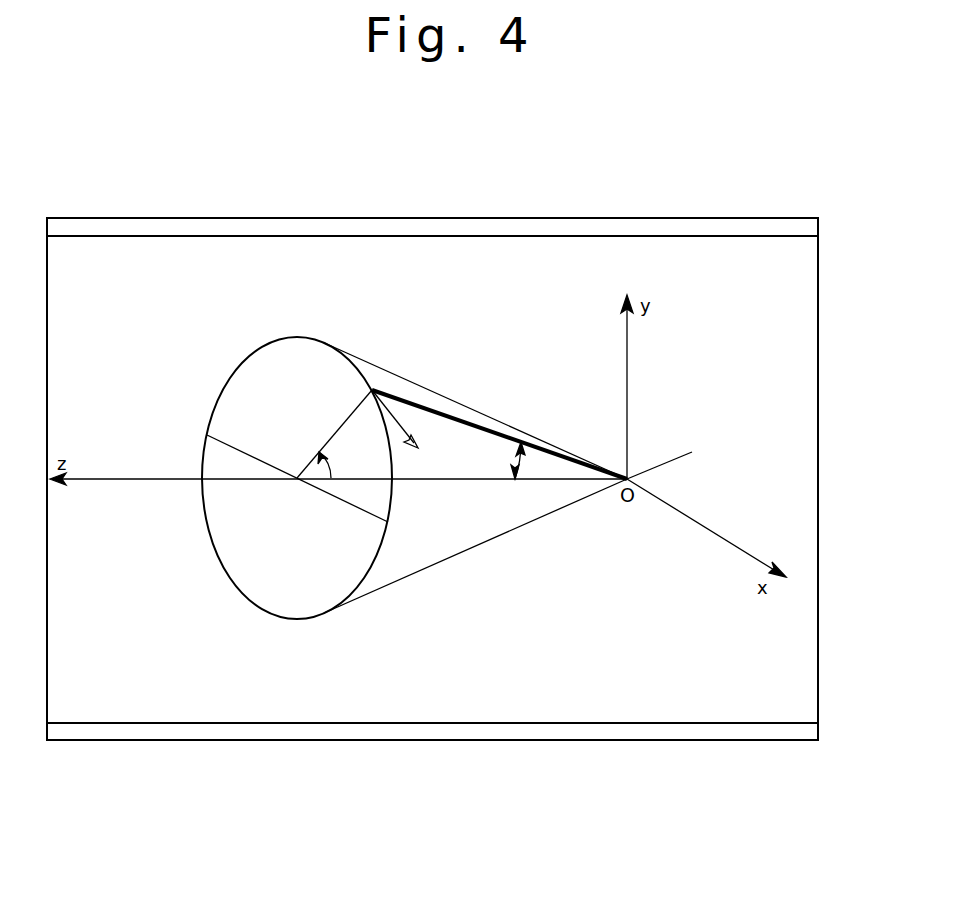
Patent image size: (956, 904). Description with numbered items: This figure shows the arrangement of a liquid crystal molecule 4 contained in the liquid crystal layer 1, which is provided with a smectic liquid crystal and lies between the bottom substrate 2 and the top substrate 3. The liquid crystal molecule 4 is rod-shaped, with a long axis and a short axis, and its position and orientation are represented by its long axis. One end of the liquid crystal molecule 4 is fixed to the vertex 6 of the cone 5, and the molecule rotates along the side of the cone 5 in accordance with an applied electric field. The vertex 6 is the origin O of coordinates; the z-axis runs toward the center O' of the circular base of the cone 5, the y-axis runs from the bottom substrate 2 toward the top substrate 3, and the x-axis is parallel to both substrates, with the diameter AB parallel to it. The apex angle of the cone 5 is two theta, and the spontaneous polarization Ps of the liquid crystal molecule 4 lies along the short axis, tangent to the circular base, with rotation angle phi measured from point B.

The liquid crystal layer 1 is at (788, 375).
The bottom substrate 2 is at (557, 740).
The top substrate 3 is at (558, 218).
The liquid crystal molecule 4 is at (455, 415).
The cone 5 is at (237, 356).
The vertex 6 is at (692, 452).